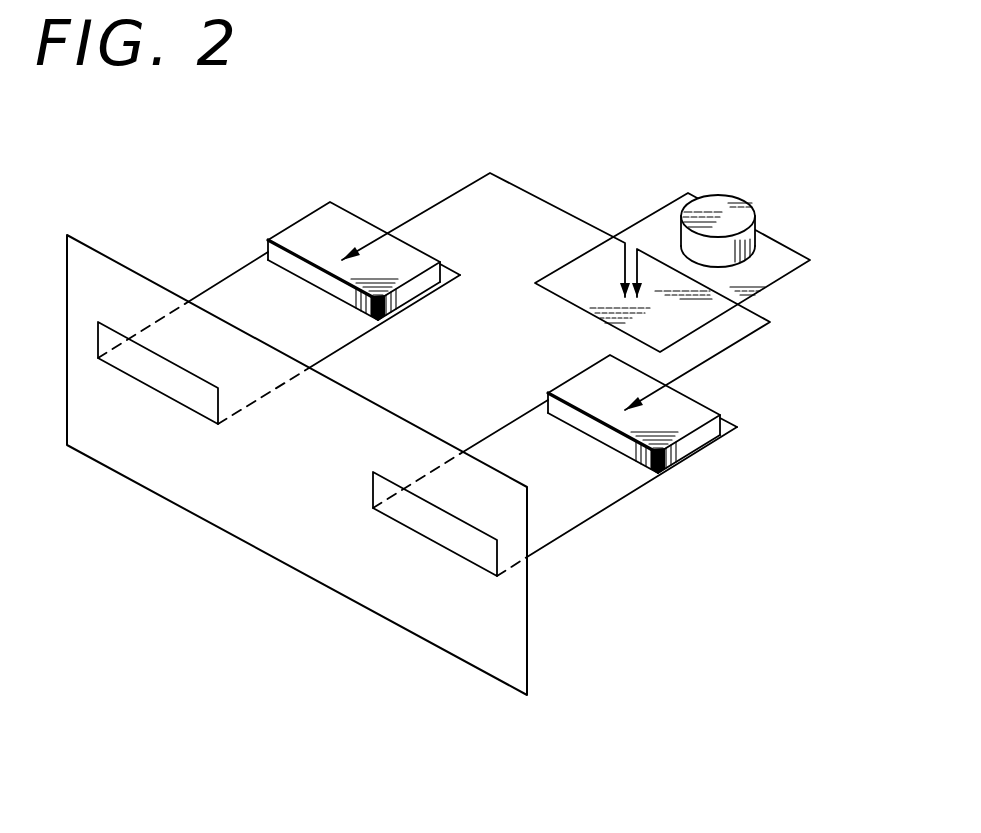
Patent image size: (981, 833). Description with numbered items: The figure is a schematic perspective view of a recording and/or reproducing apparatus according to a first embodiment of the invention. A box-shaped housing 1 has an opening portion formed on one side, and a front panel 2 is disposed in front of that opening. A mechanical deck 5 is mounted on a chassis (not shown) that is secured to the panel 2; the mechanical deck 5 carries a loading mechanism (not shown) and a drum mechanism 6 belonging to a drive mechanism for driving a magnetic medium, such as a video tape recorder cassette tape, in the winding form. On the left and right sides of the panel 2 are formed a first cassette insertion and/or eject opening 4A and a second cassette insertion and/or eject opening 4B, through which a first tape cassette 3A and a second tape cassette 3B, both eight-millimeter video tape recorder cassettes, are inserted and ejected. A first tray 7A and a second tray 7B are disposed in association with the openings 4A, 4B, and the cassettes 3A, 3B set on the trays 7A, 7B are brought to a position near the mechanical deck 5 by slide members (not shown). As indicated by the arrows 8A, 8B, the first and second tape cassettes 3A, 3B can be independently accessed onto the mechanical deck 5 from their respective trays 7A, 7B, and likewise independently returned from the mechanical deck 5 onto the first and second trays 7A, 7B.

The housing 1 is at (439, 100).
The front panel 2 is at (508, 648).
The first tape cassette 3A is at (305, 240).
The second tape cassette 3B is at (708, 437).
The first cassette insertion and/or eject opening 4A is at (133, 368).
The second cassette insertion and/or eject opening 4B is at (490, 560).
The mechanical deck 5 is at (780, 270).
The drum mechanism 6 is at (715, 202).
The first tray 7A is at (225, 313).
The second tray 7B is at (608, 495).
The arrow 8A is at (545, 205).
The arrow 8B is at (727, 352).